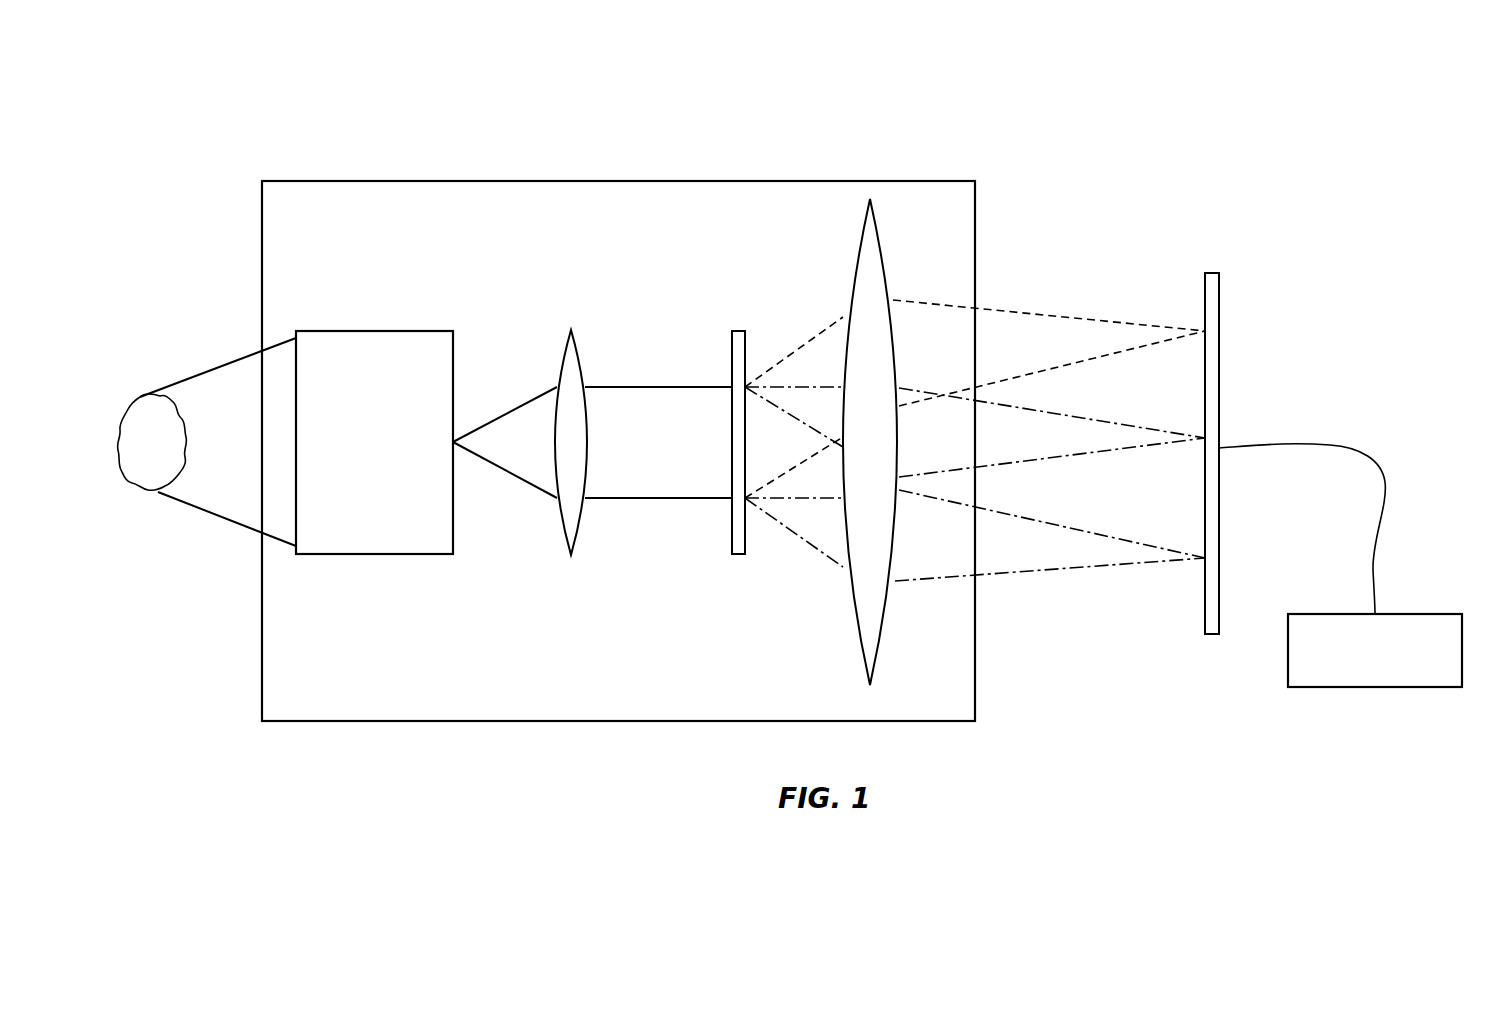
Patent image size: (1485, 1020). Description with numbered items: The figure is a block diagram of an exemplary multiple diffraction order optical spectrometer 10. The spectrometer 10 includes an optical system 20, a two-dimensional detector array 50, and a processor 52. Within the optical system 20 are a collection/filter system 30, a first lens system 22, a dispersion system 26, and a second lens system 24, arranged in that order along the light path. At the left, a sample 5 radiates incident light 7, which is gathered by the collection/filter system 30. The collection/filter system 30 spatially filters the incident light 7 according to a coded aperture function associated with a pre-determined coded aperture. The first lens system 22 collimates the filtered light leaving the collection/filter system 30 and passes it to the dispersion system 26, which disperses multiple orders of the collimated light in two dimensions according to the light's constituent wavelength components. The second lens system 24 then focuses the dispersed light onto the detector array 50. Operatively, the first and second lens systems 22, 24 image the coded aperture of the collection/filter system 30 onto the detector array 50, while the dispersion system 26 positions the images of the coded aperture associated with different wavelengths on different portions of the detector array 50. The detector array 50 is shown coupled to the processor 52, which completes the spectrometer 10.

The sample 5 is at (140, 460).
The incident light 7 is at (231, 391).
The multiple diffraction order optical spectrometer 10 is at (295, 115).
The optical system 20 is at (802, 181).
The first lens system 22 is at (580, 345).
The second lens system 24 is at (858, 657).
The dispersion system 26 is at (738, 331).
The collection/filter system 30 is at (410, 331).
The two-dimensional detector array 50 is at (1219, 308).
The processor 52 is at (1400, 614).